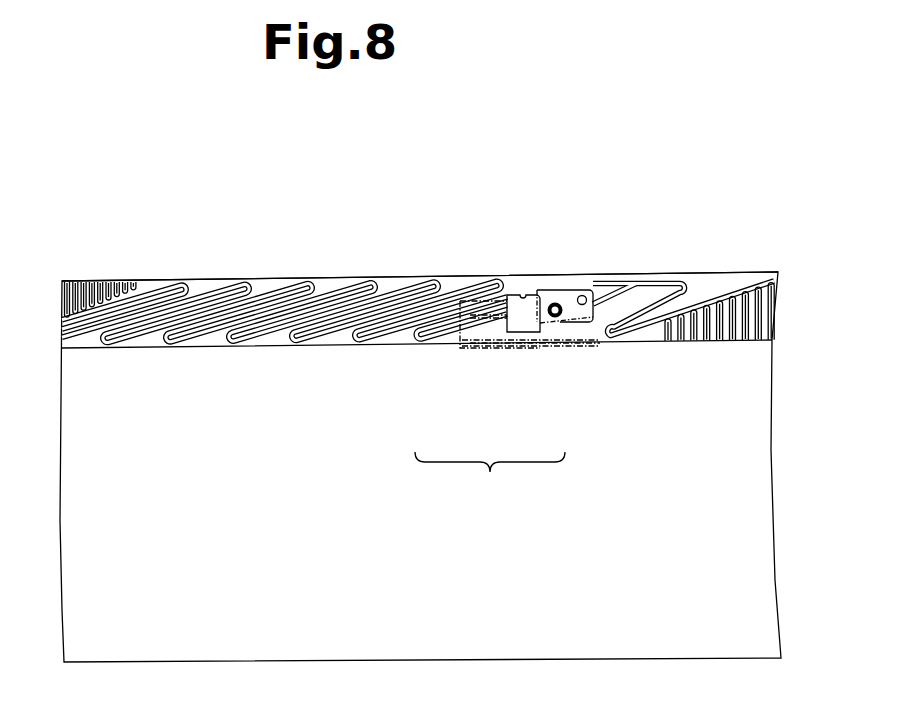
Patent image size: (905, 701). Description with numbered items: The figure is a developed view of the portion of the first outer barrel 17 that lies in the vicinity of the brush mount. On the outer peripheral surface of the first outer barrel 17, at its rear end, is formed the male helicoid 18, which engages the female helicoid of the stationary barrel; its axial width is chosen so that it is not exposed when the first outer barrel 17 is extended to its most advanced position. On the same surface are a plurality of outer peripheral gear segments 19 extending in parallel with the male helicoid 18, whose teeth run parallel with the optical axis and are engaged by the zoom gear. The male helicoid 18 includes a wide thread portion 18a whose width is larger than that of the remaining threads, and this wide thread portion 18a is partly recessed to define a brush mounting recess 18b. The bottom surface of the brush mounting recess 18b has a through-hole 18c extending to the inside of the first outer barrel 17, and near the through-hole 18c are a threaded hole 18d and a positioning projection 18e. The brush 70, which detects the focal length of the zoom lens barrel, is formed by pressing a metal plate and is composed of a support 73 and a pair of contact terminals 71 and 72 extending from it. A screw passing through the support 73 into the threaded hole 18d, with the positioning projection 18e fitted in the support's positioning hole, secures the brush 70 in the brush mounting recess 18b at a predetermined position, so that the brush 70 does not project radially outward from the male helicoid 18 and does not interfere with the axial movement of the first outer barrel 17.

The first outer barrel 17 is at (743, 385).
The male helicoid 18 is at (331, 285).
The wide thread portion 18a is at (557, 302).
The brush mounting recess 18b is at (582, 319).
The through-hole 18c is at (512, 294).
The threaded hole 18d is at (572, 292).
The positioning projection 18e is at (590, 288).
The outer peripheral gear segments 19 is at (92, 286).
The brush 70 is at (490, 405).
The contact terminal 71 is at (470, 319).
The contact terminal 72 is at (489, 345).
The support 73 is at (551, 323).